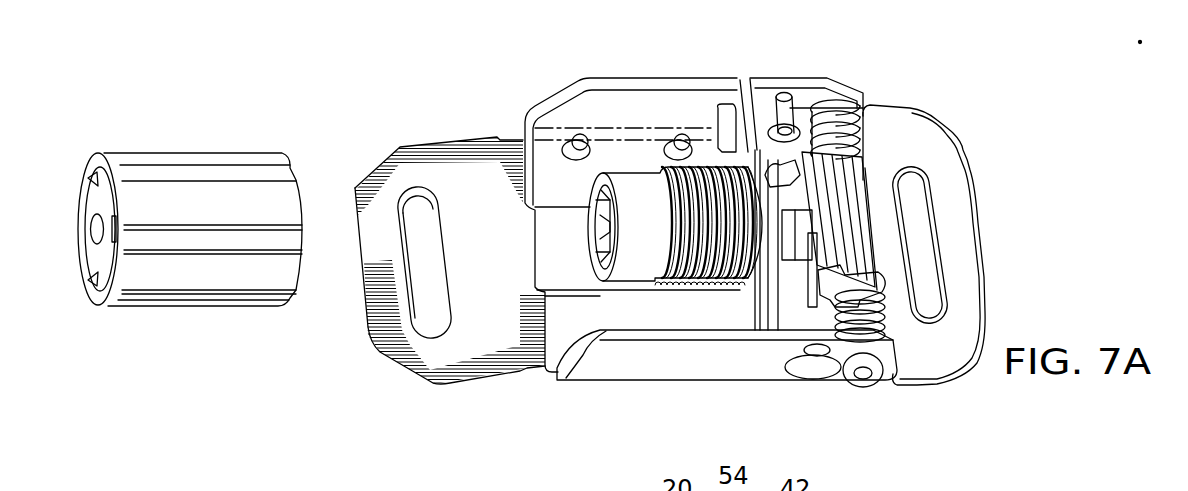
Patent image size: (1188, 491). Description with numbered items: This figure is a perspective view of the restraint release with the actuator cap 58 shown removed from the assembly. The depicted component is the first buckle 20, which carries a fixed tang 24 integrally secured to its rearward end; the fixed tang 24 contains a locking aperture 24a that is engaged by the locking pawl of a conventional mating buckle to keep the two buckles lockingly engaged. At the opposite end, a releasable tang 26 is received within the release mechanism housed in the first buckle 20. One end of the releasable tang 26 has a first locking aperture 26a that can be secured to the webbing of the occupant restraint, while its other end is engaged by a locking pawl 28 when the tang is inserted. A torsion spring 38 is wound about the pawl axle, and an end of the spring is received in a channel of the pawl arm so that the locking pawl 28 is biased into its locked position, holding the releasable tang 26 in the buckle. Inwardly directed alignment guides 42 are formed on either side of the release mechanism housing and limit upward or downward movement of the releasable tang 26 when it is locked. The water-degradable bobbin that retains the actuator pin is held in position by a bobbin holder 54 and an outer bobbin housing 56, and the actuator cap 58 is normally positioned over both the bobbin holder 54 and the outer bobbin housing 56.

The first buckle 20 is at (645, 150).
The fixed tang 24 is at (418, 360).
The locking aperture 24a is at (412, 203).
The releasable tang 26 is at (986, 284).
The first locking aperture 26a is at (917, 193).
The locking pawl 28 is at (863, 243).
The torsion spring 38 is at (863, 110).
The alignment guides 42 is at (797, 113).
The bobbin holder 54 is at (768, 382).
The outer bobbin housing 56 is at (720, 260).
The actuator cap 58 is at (195, 280).